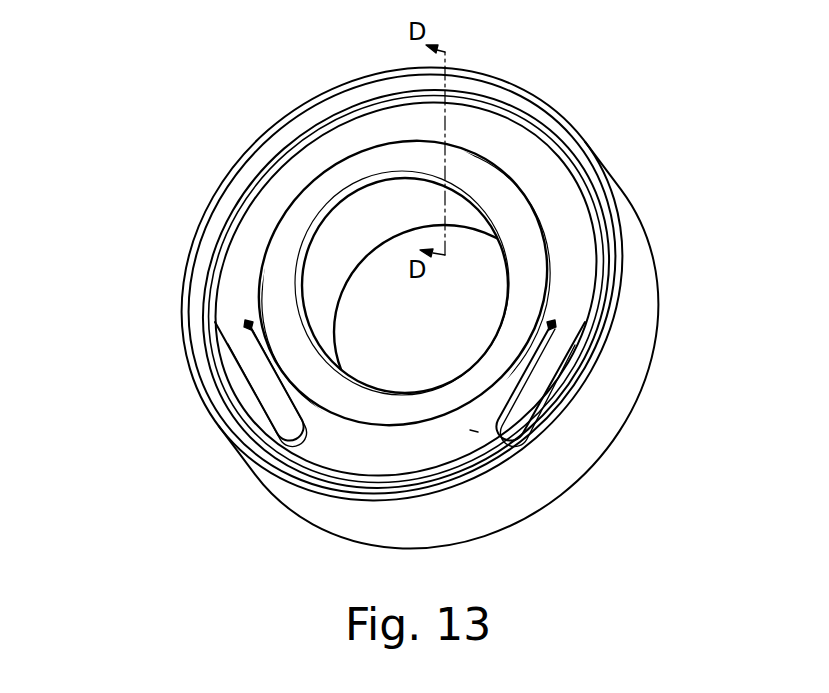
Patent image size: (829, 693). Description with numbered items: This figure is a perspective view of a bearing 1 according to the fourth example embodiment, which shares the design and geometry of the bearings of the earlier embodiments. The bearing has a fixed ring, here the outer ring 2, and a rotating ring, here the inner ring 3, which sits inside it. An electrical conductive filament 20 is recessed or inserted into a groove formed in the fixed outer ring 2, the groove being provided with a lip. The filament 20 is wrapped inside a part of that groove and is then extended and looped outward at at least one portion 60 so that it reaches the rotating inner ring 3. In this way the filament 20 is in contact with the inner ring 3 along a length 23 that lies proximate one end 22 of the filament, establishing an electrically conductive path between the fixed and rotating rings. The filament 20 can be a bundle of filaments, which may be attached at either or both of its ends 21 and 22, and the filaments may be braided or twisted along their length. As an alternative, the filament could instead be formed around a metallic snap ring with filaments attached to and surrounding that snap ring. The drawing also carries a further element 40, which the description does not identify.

The bearing 1 is at (652, 160).
The outer ring 2 is at (638, 272).
The inner ring 3 is at (372, 165).
The electrical conductive filament 20 is at (519, 106).
The end 21 is at (552, 323).
The end 22 is at (247, 323).
The length 23 is at (522, 364).
The bottom face 40 is at (390, 447).
The portion 60 is at (473, 430).